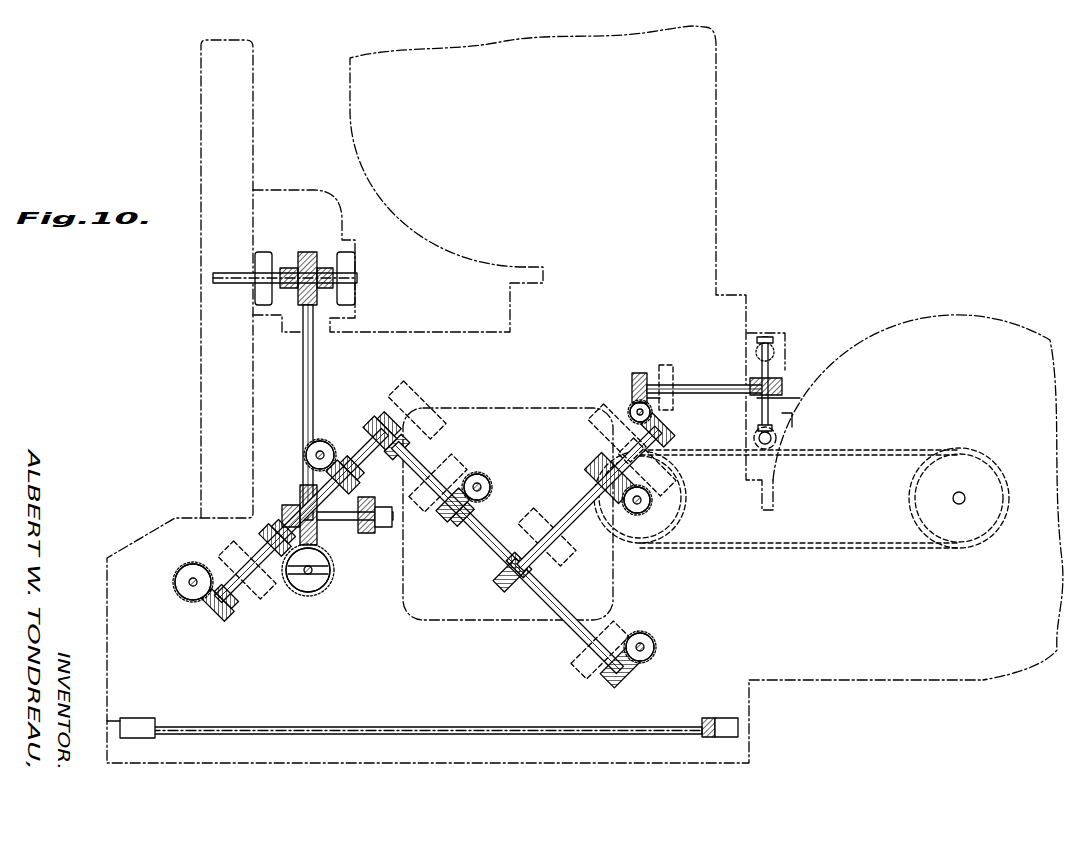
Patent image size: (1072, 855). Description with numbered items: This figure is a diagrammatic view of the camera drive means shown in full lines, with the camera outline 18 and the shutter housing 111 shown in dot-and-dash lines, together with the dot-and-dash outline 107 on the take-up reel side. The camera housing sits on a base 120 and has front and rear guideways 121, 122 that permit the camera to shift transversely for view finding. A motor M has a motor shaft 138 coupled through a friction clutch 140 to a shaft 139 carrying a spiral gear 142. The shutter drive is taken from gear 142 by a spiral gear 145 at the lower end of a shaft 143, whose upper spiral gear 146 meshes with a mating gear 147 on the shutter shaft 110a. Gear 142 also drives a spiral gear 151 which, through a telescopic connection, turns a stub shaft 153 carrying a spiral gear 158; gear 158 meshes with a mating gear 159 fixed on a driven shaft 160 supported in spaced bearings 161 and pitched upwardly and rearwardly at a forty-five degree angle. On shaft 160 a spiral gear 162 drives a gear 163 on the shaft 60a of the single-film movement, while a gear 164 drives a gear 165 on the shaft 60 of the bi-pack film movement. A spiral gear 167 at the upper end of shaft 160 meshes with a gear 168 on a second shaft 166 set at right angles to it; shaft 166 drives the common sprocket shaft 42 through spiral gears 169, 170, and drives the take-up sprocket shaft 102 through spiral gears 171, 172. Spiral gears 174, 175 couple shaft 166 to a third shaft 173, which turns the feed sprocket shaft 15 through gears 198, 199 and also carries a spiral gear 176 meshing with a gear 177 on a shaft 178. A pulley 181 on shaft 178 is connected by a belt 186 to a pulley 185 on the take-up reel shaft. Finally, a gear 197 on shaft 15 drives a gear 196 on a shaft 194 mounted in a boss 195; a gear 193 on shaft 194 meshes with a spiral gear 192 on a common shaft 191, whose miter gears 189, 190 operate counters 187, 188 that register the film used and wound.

The shutter housing 111 is at (250, 106).
The housing 18 is at (715, 138).
The casing 107 is at (958, 320).
The motor M is at (505, 422).
The belt 186 is at (852, 546).
The pulley 181 is at (680, 530).
The pulley 185 is at (1000, 472).
The base 120 is at (745, 750).
The guideway 121 is at (140, 730).
The guideway 122 is at (712, 740).
The shutter shaft 110a is at (222, 275).
The mating gear 147 is at (304, 256).
The spiral gear 146 is at (326, 272).
The shaft 143 is at (313, 360).
The driven shaft 160 is at (248, 600).
The gear 164 is at (356, 483).
The spiral gear 167 is at (378, 424).
The spaced bearings 161 is at (416, 396).
The spiral gear 168 is at (405, 447).
The spiral gear 162 is at (213, 614).
The mating gear 163 is at (180, 598).
The shaft 60a is at (190, 584).
The mating gear 159 is at (270, 526).
The spiral gear 145 is at (288, 508).
The spiral gear 142 is at (301, 488).
The shaft 60 is at (318, 456).
The gear 165 is at (326, 442).
The spiral gear 158 is at (298, 585).
The stub shaft 153 is at (326, 578).
The spiral gear 151 is at (314, 592).
The shaft 139 is at (344, 521).
The friction clutch 140 is at (367, 535).
The motor shaft 138 is at (384, 529).
The second angularly disposed shaft 166 is at (490, 548).
The spiral gear 169 is at (450, 522).
The shaft 42 is at (480, 484).
The spiral gear 170 is at (486, 497).
The spiral gear 174 is at (508, 592).
The spiral gear 175 is at (528, 570).
The spiral gear 171 is at (620, 680).
The shaft 102 is at (655, 642).
The spiral gear 172 is at (655, 656).
The third angularly disposed shaft 173 is at (568, 520).
The spiral gear 176 is at (596, 462).
The mating gear 177 is at (652, 498).
The shaft 178 is at (636, 506).
The spiral gear 198 is at (672, 432).
The spiral gear 199 is at (632, 414).
The mating gear 197 is at (630, 408).
The spiral gear 196 is at (636, 375).
The shaft 194 is at (700, 386).
The boss 195 is at (660, 366).
The shaft 15 is at (650, 398).
The miter gear 189 is at (765, 336).
The counter 187 is at (785, 342).
The common shaft 191 is at (756, 348).
The spiral gear 192 is at (780, 382).
The meshing gear 193 is at (802, 399).
The counter 188 is at (788, 420).
The miter gear 190 is at (774, 438).